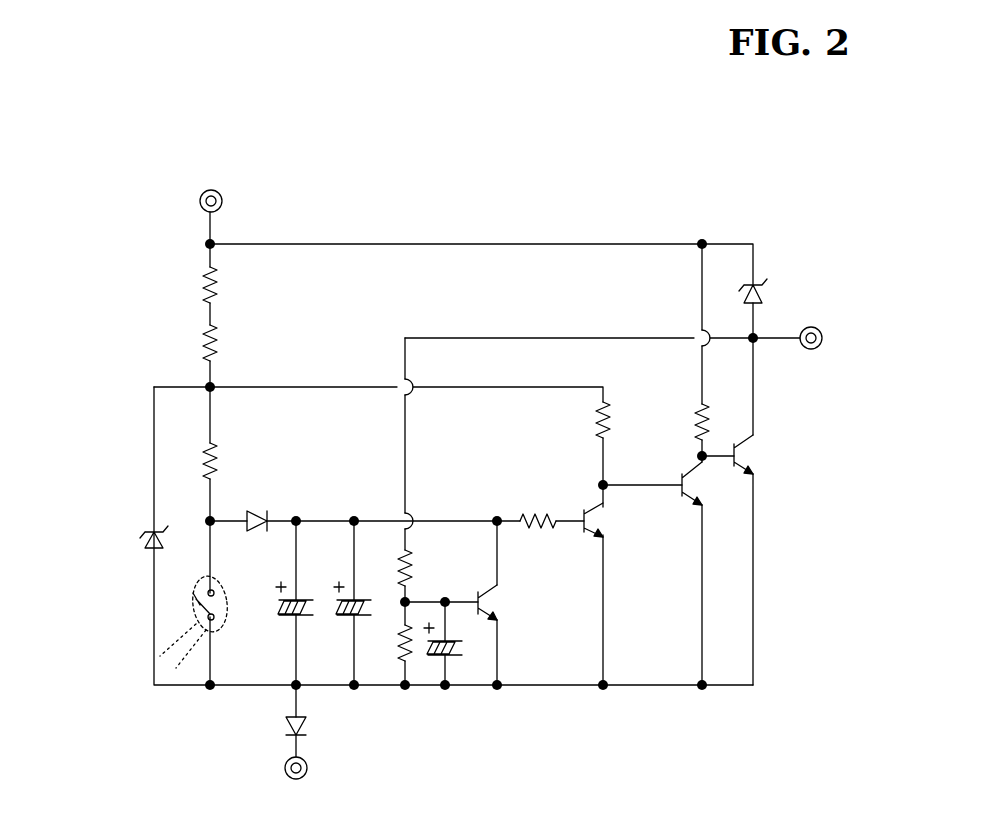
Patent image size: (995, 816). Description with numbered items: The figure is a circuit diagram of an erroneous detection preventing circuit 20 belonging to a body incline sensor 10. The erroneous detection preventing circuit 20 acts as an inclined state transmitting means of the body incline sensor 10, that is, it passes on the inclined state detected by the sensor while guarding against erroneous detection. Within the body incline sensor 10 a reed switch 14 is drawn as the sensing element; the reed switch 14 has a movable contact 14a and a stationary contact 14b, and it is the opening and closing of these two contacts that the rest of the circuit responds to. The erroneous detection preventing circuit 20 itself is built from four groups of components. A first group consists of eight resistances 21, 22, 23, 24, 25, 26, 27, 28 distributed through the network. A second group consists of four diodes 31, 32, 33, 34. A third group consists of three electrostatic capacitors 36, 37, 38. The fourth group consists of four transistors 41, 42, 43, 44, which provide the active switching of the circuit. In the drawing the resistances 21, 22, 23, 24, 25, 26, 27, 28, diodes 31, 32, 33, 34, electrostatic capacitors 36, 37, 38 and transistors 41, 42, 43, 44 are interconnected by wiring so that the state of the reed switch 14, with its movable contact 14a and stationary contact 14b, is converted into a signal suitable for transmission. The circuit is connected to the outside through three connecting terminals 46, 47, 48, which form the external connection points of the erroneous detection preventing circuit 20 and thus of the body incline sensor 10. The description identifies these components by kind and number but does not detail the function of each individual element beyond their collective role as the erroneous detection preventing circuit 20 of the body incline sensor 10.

The body incline sensor 10 is at (105, 257).
The reed switch 14 is at (193, 595).
The movable contact 14a is at (154, 662).
The stationary contact 14b is at (177, 672).
The erroneous detection preventing circuit 20 is at (420, 216).
The resistance 21 is at (210, 268).
The resistance 22 is at (210, 328).
The resistance 23 is at (213, 456).
The resistance 24 is at (412, 553).
The resistance 25 is at (410, 660).
The resistance 26 is at (539, 514).
The resistance 27 is at (608, 403).
The resistance 28 is at (702, 404).
The diode 31 is at (150, 549).
The diode 32 is at (252, 512).
The diode 33 is at (285, 718).
The diode 34 is at (762, 290).
The electrostatic capacitor 36 is at (285, 618).
The electrostatic capacitor 37 is at (344, 618).
The electrostatic capacitor 38 is at (450, 660).
The transistor 41 is at (523, 604).
The transistor 42 is at (612, 530).
The transistor 43 is at (682, 505).
The transistor 44 is at (770, 464).
The connecting terminal 46 is at (222, 201).
The connecting terminal 47 is at (812, 349).
The connecting terminal 48 is at (284, 768).